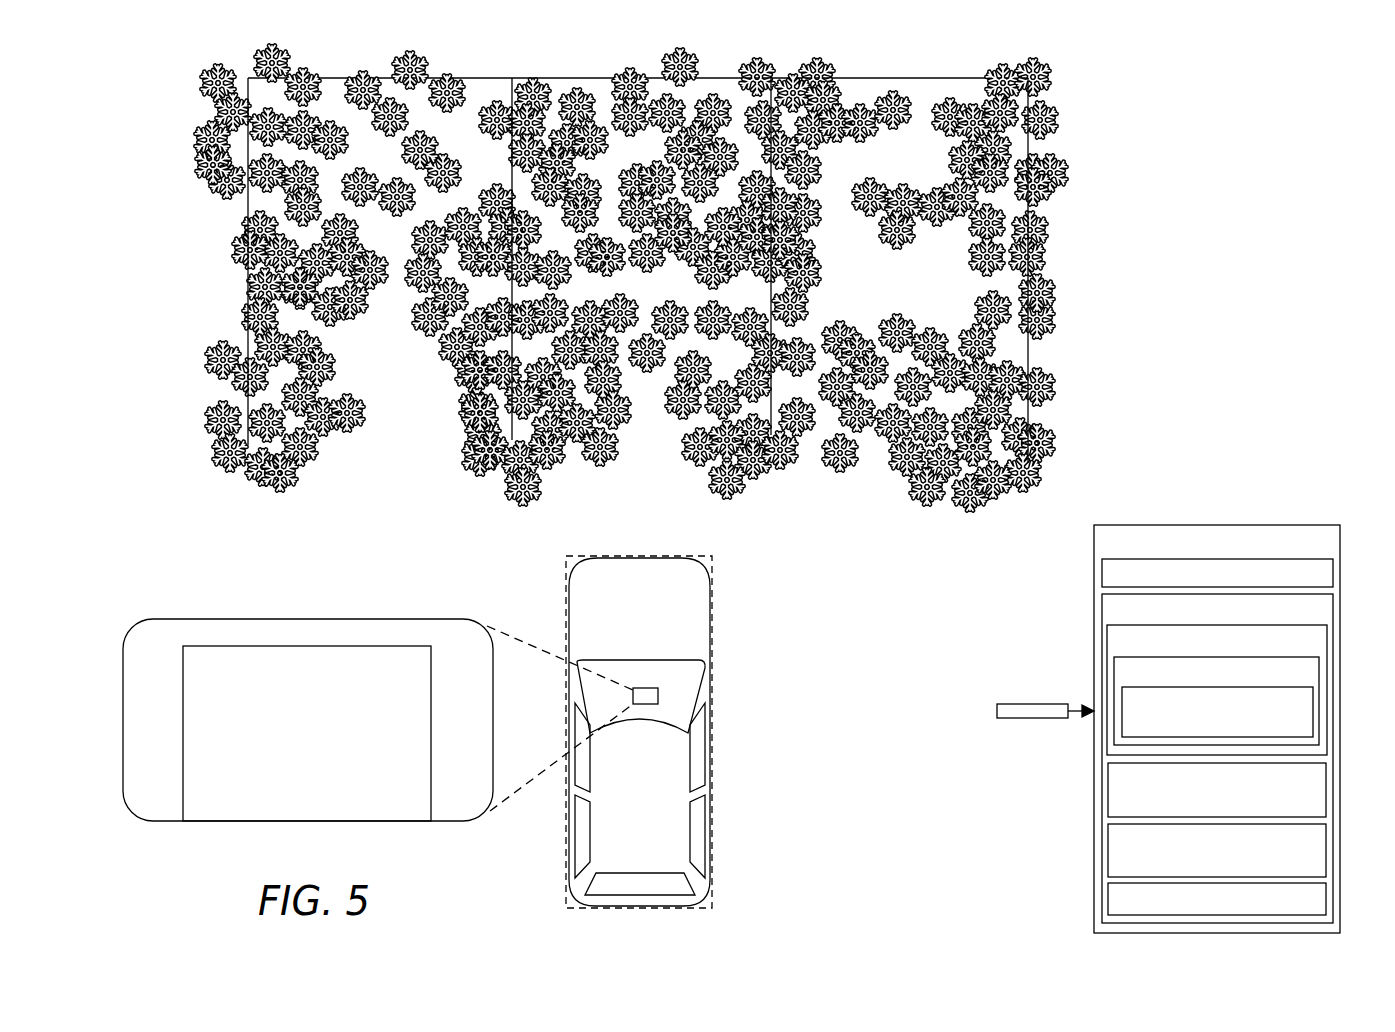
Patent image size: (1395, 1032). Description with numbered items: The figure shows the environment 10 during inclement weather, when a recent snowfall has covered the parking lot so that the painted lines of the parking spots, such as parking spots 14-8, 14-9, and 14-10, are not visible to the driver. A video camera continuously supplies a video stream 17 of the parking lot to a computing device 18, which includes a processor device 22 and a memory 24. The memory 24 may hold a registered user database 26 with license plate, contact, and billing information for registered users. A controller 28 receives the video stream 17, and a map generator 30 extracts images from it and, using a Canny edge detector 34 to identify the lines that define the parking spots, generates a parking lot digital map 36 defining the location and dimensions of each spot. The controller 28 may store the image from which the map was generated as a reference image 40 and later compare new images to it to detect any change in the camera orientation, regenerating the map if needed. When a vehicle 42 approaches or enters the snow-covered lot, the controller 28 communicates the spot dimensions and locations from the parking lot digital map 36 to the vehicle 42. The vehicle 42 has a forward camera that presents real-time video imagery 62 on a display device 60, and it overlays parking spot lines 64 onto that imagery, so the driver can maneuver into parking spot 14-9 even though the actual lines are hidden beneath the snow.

The environment 10 is at (1252, 33).
The parking spot 14-8 is at (400, 161).
The parking spot 14-9 is at (662, 161).
The parking spot 14-10 is at (917, 161).
The video stream 17 is at (1022, 703).
The computing device 18 is at (1342, 539).
The processor device 22 is at (1335, 573).
The memory 24 is at (1335, 605).
The registered user database 26 is at (1327, 787).
The controller 28 is at (1328, 638).
The map generator 30 is at (1321, 669).
The Canny edge detector 34 is at (1315, 704).
The parking lot digital map 36 is at (1327, 846).
The reference image 40 is at (1327, 892).
The vehicle 42 is at (648, 795).
The display device 60 is at (386, 620).
The real-time video imagery 62 is at (475, 726).
The parking spot lines 64 is at (237, 646).